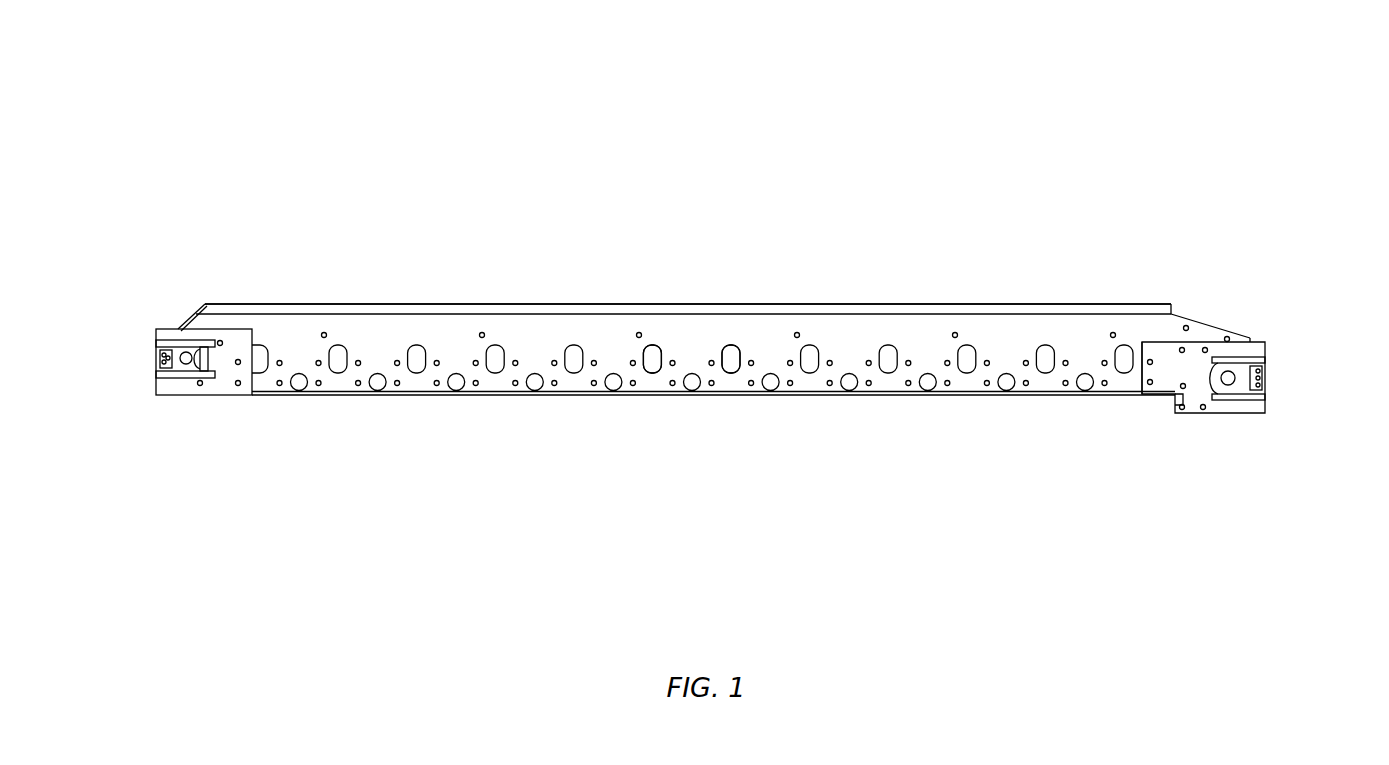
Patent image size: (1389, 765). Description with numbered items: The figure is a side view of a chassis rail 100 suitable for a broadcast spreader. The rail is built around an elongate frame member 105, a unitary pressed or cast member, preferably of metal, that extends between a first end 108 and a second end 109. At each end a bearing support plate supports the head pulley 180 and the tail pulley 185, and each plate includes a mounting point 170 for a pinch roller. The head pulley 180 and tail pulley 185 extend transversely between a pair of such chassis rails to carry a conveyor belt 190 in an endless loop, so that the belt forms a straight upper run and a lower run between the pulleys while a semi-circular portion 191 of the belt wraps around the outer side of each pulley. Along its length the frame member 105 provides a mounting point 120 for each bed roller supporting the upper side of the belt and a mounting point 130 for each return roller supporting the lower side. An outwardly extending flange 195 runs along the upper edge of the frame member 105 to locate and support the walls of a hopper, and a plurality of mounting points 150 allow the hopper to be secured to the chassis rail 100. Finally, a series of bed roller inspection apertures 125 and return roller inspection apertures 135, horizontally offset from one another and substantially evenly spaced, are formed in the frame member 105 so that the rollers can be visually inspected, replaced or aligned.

The chassis rail 100 is at (959, 22).
The frame member 105 is at (450, 347).
The first end 108 is at (185, 315).
The second end 109 is at (1218, 318).
The mounting point 120 is at (947, 344).
The bed roller inspection apertures 125 is at (731, 344).
The mounting point 130 is at (948, 395).
The return roller inspection apertures 135 is at (613, 395).
The mounting points 150 is at (324, 333).
The mounting point 170 is at (1180, 385).
The head pulley 180 is at (1228, 385).
The tail pulley 185 is at (186, 364).
The conveyor belt 190 is at (1270, 378).
The semi-circular portion 191 is at (155, 357).
The flange 195 is at (983, 306).